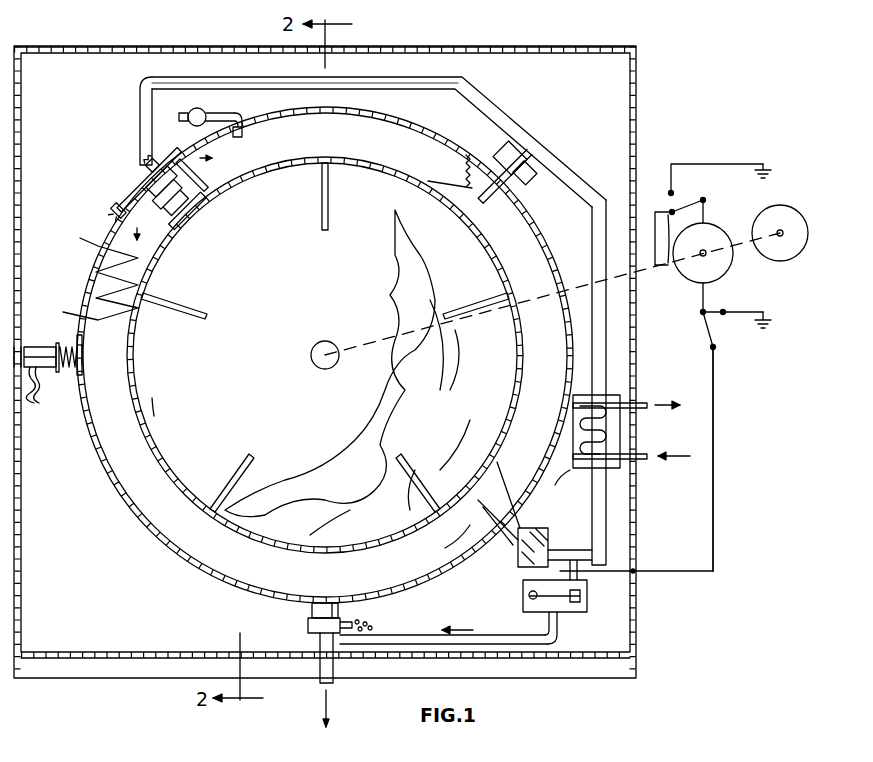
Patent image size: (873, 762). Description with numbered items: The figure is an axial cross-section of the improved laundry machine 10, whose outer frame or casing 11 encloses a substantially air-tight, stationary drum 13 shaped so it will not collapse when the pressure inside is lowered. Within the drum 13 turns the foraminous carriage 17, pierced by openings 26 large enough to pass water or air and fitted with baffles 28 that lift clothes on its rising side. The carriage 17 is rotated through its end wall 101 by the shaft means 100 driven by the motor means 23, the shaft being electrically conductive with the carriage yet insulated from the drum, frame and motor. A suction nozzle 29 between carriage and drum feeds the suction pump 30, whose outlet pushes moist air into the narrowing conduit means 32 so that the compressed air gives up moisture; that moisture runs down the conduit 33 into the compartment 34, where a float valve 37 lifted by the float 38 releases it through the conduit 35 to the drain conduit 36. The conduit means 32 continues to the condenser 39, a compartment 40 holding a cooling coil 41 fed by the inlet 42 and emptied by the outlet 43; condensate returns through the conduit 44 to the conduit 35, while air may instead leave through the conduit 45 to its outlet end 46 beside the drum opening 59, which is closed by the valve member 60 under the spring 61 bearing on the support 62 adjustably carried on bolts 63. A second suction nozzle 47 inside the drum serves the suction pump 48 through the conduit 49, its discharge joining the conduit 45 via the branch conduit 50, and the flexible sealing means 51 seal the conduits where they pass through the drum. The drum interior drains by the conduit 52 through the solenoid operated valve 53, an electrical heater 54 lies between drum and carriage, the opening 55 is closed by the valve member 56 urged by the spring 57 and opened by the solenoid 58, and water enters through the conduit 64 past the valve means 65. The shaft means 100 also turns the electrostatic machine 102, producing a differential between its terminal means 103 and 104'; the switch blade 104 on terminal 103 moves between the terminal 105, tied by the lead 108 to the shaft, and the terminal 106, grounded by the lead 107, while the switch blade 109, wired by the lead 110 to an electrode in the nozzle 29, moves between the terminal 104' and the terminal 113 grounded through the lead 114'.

The laundry machine 10 is at (657, 86).
The outer frame or casing 11 is at (28, 615).
The drum 13 is at (152, 548).
The foraminous carriage 17 is at (174, 462).
The motor means 23 is at (788, 206).
The openings 26 is at (154, 416).
The baffles 28 is at (195, 312).
The suction nozzle 29 is at (440, 545).
The suction pump 30 is at (530, 528).
The conduit means 32 is at (560, 548).
The conduit 33 is at (636, 566).
The compartment 34 is at (523, 602).
The conduit 35 is at (390, 635).
The drain conduit 36 is at (338, 675).
The float valve 37 is at (548, 615).
The float 38 is at (529, 593).
The condenser 39 is at (603, 392).
The compartment 40 is at (555, 478).
The cooling coil 41 is at (600, 425).
The inlet 42 is at (640, 460).
The outlet 43 is at (640, 403).
The conduit 44 is at (612, 530).
The conduit 45 is at (510, 110).
The outlet end 46 is at (140, 124).
The suction nozzle 47 is at (445, 180).
The suction pump 48 is at (510, 158).
The conduit 49 is at (497, 145).
The branch conduit 50 is at (525, 173).
The flexible sealing means 51 is at (535, 222).
The conduit 52 is at (318, 603).
The solenoid operated valve 53 is at (308, 627).
The electrical heater 54 is at (125, 320).
The opening 55 is at (87, 360).
The valve member 56 is at (78, 340).
The spring 57 is at (64, 372).
The solenoid 58 is at (52, 347).
The opening 59 is at (149, 180).
The valve member 60 is at (154, 174).
The spring 61 is at (192, 175).
The support 62 is at (187, 210).
The bolts 63 is at (116, 213).
The conduit 64 is at (244, 115).
The valve means 65 is at (203, 112).
The shaft means 100 is at (328, 341).
The end wall 101 is at (365, 190).
The electrostatic machine 102 is at (695, 283).
The terminal means 103 is at (708, 200).
The switch blade 104 is at (700, 189).
The terminal means 104' is at (691, 427).
The terminal 105 is at (658, 278).
The terminal 106 is at (668, 192).
The lead 107 is at (738, 164).
The lead 108 is at (652, 240).
The switch blade 109 is at (720, 335).
The lead 110 is at (715, 440).
The terminal 113 is at (732, 312).
The lead 114' is at (786, 306).